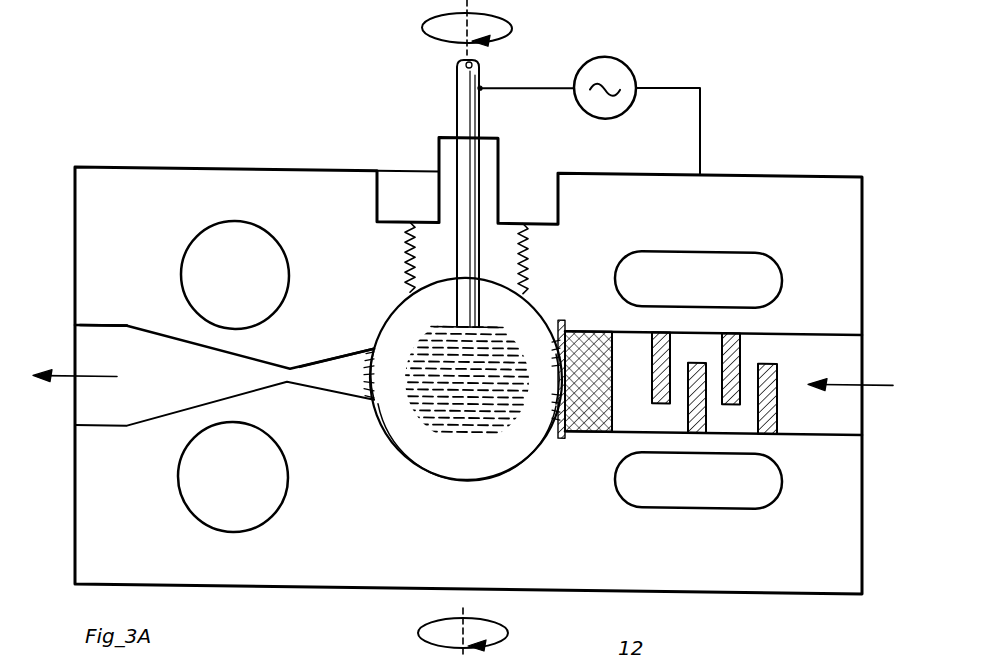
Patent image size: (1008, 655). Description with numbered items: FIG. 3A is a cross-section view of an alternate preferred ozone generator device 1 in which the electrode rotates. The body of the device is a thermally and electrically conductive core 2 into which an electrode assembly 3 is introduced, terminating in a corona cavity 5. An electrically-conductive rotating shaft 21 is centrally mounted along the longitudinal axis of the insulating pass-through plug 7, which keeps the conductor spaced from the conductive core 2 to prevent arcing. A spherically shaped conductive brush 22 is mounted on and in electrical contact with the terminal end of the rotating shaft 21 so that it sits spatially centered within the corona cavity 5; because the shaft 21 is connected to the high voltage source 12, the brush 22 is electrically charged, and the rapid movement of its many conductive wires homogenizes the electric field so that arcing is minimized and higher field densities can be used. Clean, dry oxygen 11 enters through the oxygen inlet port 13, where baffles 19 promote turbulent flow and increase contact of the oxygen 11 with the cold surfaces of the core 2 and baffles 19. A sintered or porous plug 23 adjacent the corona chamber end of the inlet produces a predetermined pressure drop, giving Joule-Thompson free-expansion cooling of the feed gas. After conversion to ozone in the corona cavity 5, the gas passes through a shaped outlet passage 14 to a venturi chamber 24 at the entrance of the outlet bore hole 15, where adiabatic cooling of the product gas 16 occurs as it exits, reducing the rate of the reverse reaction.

The ozone generator device 1 is at (786, 148).
The thermally and electrically conductive core 2 is at (834, 207).
The electrode assembly 3 is at (420, 150).
The corona cavity 5 is at (418, 434).
The insulating pass-through plug 7 is at (499, 191).
The oxygen 11 is at (893, 377).
The high voltage source 12 is at (622, 55).
The oxygen inlet port 13 is at (843, 338).
The shaped outlet passage 14 is at (350, 365).
The outlet bore hole 15 is at (102, 330).
The product gas 16 is at (60, 372).
The baffles 19 is at (743, 339).
The electrically-conductive rotating shaft 21 is at (488, 97).
The spherically shaped conductive brush 22 is at (507, 333).
The sintered or porous plug 23 is at (561, 426).
The venturi chamber 24 is at (210, 389).